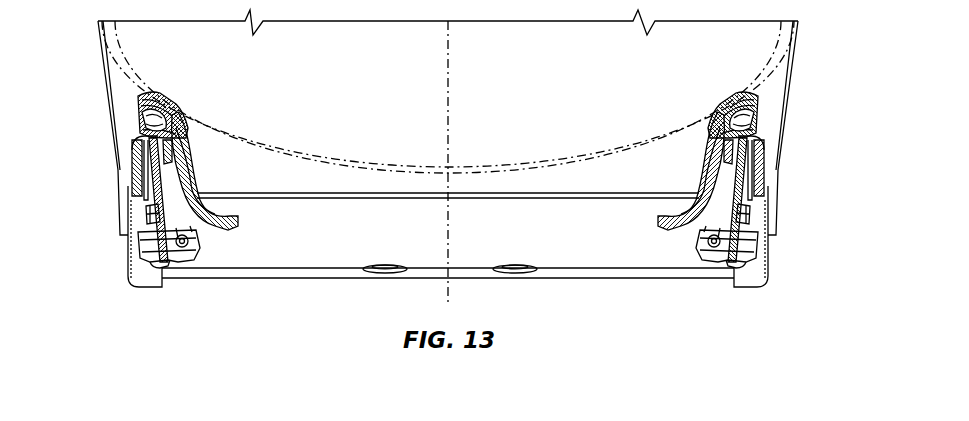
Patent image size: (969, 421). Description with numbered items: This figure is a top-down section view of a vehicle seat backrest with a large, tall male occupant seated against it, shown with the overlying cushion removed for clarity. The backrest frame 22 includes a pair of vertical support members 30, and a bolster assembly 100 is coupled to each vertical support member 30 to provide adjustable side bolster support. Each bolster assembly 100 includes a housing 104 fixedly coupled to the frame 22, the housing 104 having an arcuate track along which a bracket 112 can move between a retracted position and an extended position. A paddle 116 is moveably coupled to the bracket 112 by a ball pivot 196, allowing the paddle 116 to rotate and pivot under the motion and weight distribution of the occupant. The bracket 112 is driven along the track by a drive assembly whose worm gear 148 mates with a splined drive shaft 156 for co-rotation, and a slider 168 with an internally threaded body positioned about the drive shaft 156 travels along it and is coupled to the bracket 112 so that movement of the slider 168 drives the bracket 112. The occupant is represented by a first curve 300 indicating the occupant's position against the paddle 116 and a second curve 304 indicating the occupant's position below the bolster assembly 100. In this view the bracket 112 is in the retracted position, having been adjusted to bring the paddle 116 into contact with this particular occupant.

The bolster assembly 100 is at (99, 303).
The frame 22 is at (290, 302).
The vertical support member 30 is at (148, 287).
The first curve 300 is at (202, 118).
The second curve 304 is at (247, 147).
The paddle 116 is at (140, 97).
The ball pivot 196 is at (142, 126).
The housing 104 is at (133, 160).
The drive shaft 156 is at (150, 185).
The bracket 112 is at (180, 173).
The slider 168 is at (148, 210).
The worm gear 148 is at (148, 247).